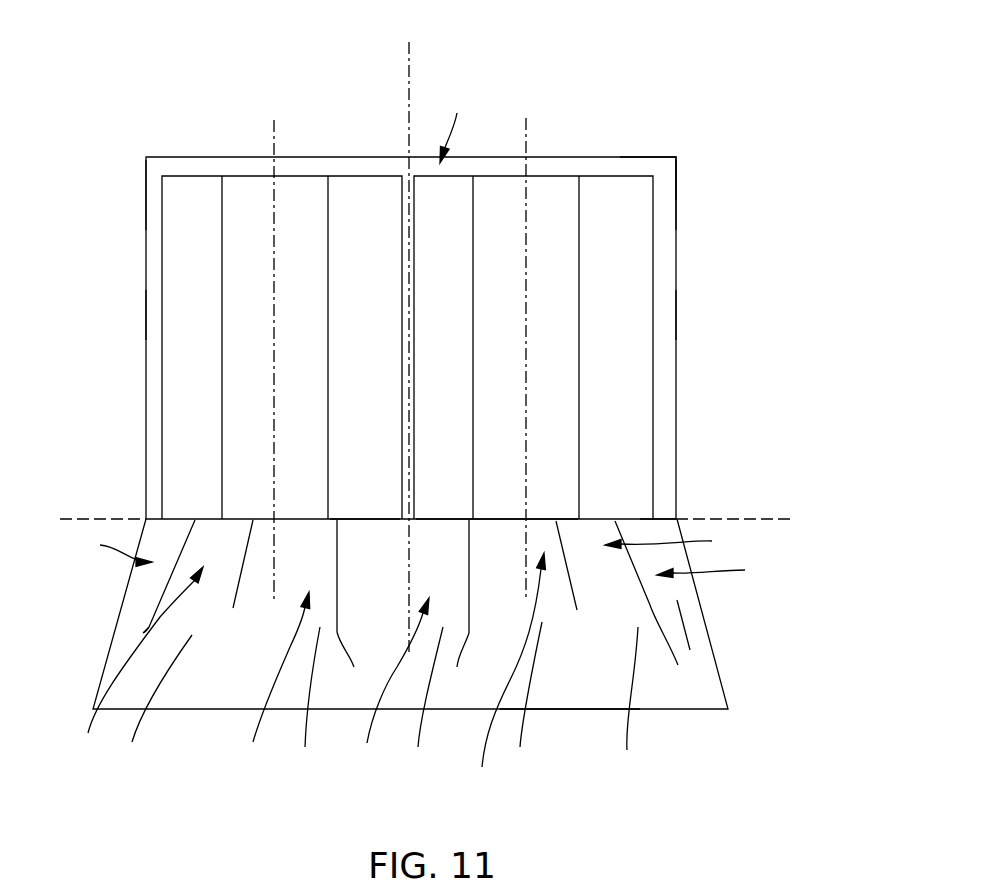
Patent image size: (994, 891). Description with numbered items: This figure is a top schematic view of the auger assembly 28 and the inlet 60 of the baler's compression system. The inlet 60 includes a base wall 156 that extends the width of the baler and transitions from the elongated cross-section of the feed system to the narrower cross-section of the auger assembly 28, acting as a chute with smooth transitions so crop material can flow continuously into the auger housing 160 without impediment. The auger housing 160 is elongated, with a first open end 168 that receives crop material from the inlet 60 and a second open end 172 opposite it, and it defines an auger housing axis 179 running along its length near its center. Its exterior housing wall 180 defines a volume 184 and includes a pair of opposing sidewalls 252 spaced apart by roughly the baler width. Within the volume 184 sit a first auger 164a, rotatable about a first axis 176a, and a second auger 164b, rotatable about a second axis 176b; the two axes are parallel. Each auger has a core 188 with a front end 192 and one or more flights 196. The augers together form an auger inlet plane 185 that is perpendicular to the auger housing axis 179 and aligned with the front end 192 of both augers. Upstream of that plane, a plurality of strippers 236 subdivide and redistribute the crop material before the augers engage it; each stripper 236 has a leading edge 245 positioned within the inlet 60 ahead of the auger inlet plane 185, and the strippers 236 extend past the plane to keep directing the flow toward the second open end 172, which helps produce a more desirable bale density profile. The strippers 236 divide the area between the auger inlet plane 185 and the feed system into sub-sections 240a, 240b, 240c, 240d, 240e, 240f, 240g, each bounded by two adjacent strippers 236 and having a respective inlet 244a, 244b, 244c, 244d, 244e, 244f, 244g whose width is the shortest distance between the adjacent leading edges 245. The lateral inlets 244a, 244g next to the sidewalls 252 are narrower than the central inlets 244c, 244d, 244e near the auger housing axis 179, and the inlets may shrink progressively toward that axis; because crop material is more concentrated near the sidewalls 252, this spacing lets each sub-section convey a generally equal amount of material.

The auger assembly 28 is at (677, 197).
The inlet 60 is at (715, 655).
The base wall 156 is at (560, 710).
The auger housing 160 is at (676, 258).
The first auger 164a is at (570, 185).
The second auger 164b is at (297, 192).
The first open end 168 is at (663, 517).
The second open end 172 is at (653, 157).
The first axis 176a is at (530, 118).
The second axis 176b is at (274, 120).
The auger housing axis 179 is at (412, 50).
The exterior housing wall 180 is at (145, 195).
The volume 184 is at (456, 124).
The auger inlet plane 185 is at (786, 517).
The core 188 is at (328, 358).
The front end 192 is at (352, 518).
The flights 196 is at (185, 387).
The strippers 236 is at (160, 598).
The sub-section 240a is at (102, 550).
The sub-section 240b is at (135, 665).
The sub-section 240c is at (271, 682).
The sub-section 240d is at (388, 687).
The sub-section 240e is at (503, 675).
The sub-section 240f is at (677, 542).
The sub-section 240g is at (722, 572).
The inlet 244a is at (132, 628).
The inlet 244b is at (153, 703).
The inlet 244c is at (307, 701).
The inlet 244d is at (422, 704).
The inlet 244e is at (522, 698).
The inlet 244f is at (629, 705).
The inlet 244g is at (685, 623).
The leading edge 245 is at (97, 677).
The sidewalls 252 is at (147, 322).